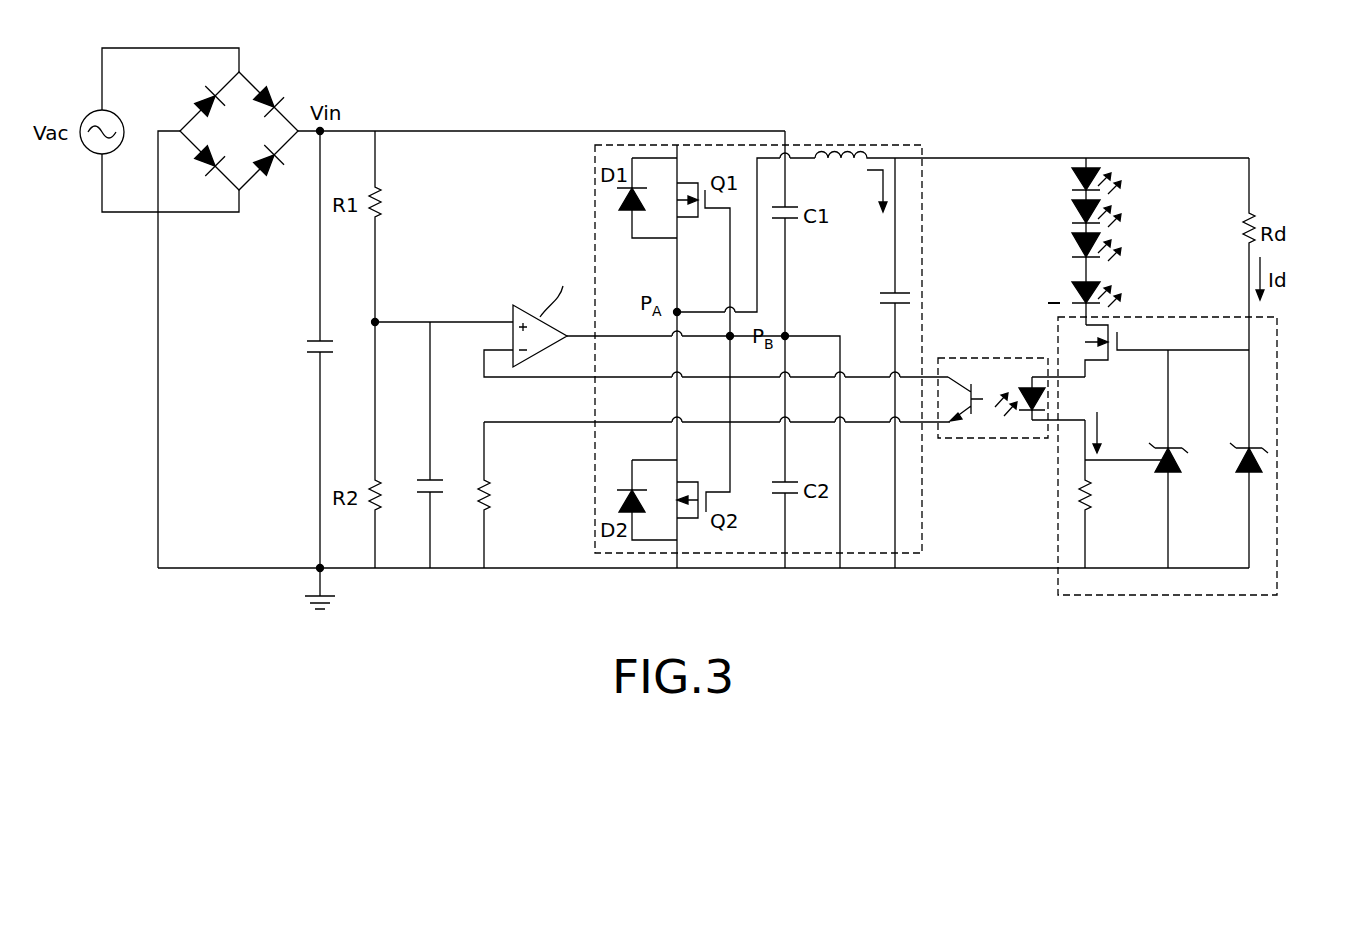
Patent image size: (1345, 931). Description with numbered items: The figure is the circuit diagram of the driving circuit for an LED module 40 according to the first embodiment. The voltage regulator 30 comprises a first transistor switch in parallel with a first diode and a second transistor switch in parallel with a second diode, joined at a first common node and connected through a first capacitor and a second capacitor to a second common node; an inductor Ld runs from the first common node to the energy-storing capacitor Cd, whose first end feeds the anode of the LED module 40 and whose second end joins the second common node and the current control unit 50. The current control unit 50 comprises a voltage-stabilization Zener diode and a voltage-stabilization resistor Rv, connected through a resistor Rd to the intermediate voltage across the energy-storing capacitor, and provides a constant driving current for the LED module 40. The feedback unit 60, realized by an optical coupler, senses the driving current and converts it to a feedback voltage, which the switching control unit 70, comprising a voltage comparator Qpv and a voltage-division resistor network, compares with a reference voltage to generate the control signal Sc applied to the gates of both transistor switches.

The voltage regulator 30 is at (870, 147).
The LED module 40 is at (1123, 198).
The current control unit 50 is at (1168, 322).
The feedback unit 60 is at (990, 357).
The switching control unit 70 is at (453, 302).